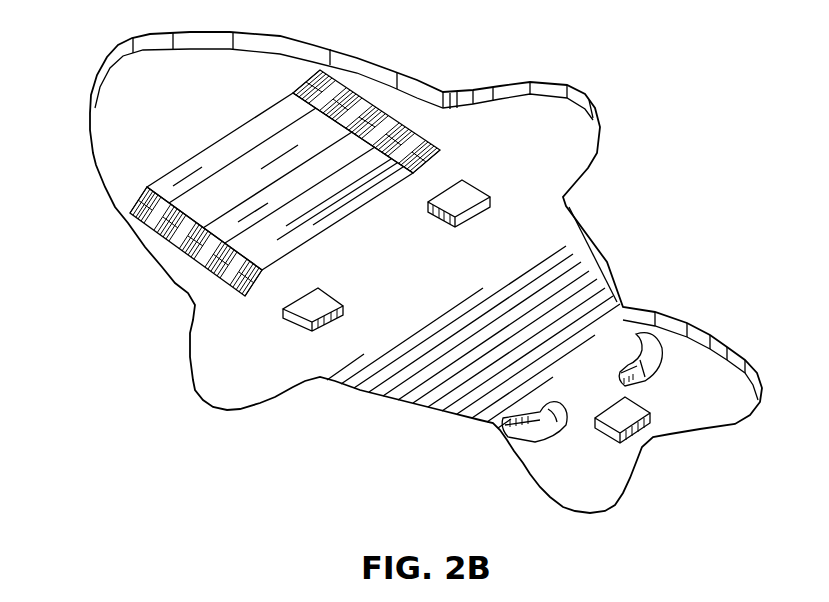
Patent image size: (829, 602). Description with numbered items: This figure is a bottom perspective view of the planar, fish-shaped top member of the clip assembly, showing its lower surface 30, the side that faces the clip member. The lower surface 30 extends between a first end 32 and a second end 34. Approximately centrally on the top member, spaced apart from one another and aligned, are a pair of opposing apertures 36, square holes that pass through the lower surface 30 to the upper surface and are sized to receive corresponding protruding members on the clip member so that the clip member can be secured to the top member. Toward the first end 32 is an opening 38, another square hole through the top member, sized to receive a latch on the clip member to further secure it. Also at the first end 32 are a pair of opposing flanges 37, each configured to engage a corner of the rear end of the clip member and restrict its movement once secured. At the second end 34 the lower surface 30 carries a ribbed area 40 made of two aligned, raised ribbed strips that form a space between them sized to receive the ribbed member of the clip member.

The lower surface 30 is at (526, 244).
The first end 32 is at (686, 465).
The second end 34 is at (122, 268).
The apertures 36 is at (437, 216).
The flanges 37 is at (646, 346).
The opening 38 is at (605, 428).
The ribbed area 40 is at (333, 80).